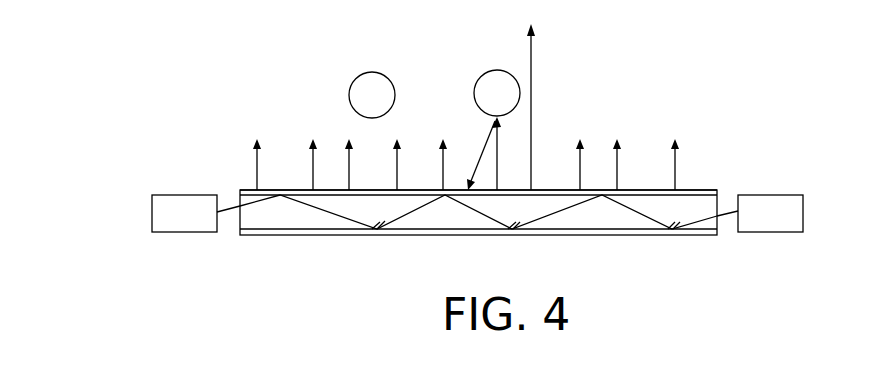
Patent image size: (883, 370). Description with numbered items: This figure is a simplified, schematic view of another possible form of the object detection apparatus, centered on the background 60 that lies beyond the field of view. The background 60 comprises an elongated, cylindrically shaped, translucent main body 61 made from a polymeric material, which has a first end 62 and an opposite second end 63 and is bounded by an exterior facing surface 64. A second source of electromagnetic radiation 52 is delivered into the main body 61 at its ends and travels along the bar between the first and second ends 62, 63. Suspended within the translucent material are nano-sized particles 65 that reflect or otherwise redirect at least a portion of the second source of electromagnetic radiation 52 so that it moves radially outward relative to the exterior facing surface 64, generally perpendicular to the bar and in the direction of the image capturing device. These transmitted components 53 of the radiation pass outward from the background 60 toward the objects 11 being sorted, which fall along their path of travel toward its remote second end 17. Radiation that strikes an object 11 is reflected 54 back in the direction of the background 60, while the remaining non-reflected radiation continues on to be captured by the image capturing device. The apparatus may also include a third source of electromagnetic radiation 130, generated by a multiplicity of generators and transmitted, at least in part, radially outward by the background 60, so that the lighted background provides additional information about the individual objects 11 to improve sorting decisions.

The objects 11 is at (487, 72).
The second end of the free-fall path of travel 17 is at (591, 90).
The second source of electromagnetic radiation 52 is at (196, 224).
The transmitted electromagnetic radiation 53 is at (683, 162).
The reflected electromagnetic radiation 54 is at (485, 150).
The background 60 is at (654, 252).
The main body 61 is at (648, 189).
The first end 62 is at (250, 189).
The second end 63 is at (708, 188).
The exterior facing surface 64 is at (376, 189).
The nano-sized particles 65 is at (447, 226).
The third source of electromagnetic radiation 130 is at (182, 236).